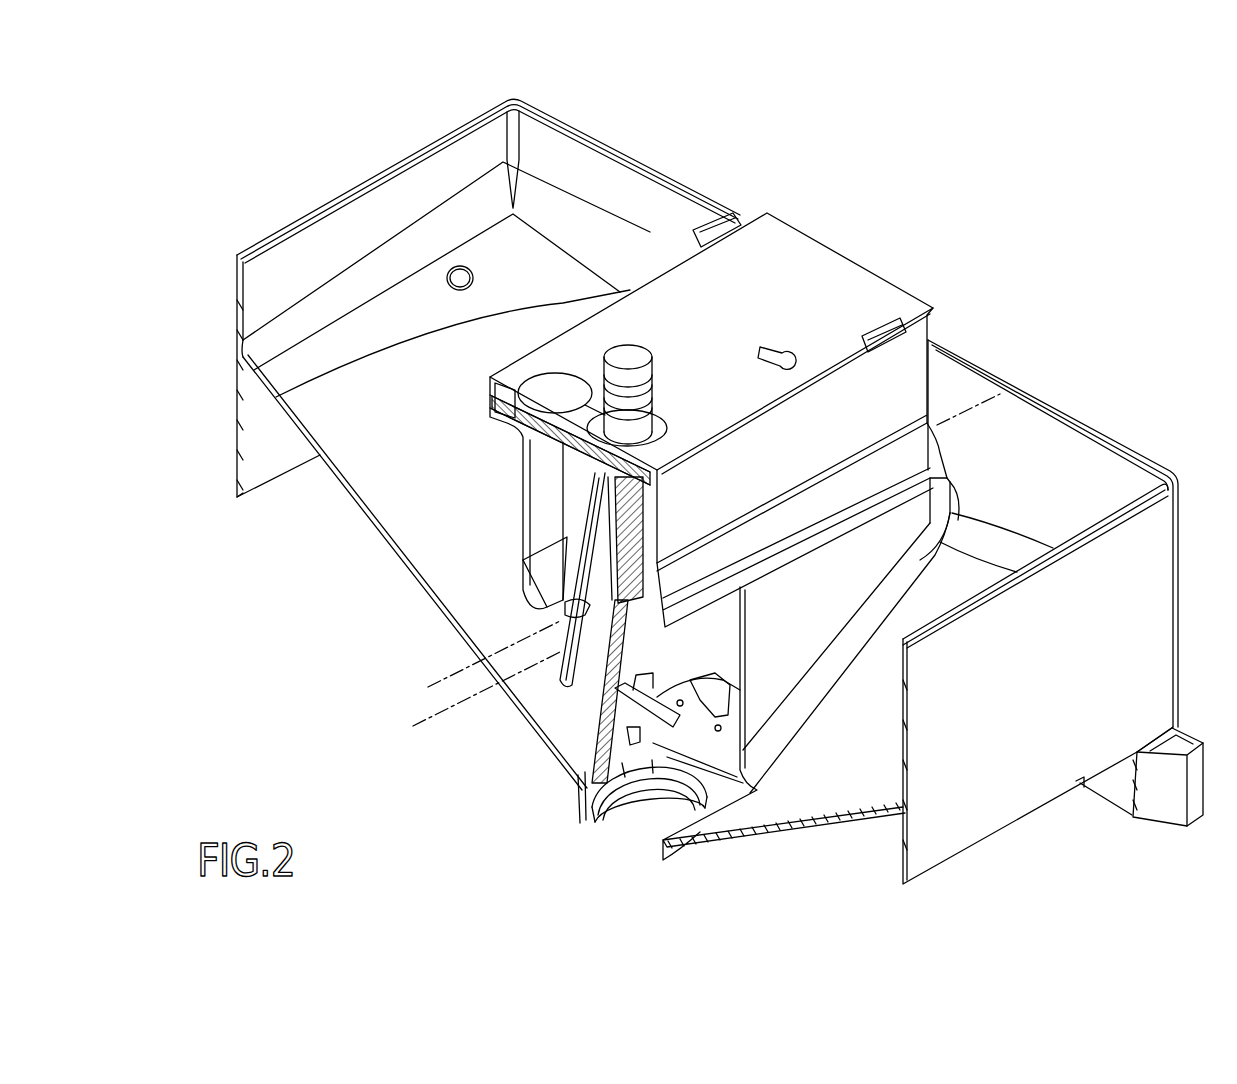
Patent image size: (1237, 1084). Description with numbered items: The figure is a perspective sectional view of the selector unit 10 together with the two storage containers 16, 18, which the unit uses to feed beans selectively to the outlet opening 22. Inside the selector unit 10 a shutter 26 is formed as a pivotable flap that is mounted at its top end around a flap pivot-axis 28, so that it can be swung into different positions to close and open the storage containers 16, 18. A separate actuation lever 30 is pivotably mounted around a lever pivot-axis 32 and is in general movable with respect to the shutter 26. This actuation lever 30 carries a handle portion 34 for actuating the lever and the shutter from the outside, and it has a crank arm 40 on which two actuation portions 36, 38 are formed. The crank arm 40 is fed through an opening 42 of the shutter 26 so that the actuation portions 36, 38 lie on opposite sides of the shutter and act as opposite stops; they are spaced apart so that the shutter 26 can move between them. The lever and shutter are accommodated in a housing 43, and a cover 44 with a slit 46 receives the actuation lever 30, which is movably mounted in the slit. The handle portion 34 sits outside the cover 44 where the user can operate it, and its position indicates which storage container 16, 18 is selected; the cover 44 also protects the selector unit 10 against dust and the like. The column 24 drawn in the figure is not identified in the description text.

The selector unit 10 is at (962, 197).
The storage container 16 is at (1030, 420).
The storage container 18 is at (625, 187).
The outlet opening 22 is at (634, 822).
The support column 24 is at (777, 670).
The shutter 26 is at (587, 767).
The flap pivot-axis 28 is at (438, 714).
The actuation lever 30 is at (600, 520).
The lever pivot-axis 32 is at (428, 687).
The handle portion 34 is at (640, 350).
The actuation portion 36 is at (618, 745).
The actuation portion 38 is at (585, 760).
The crank arm 40 is at (573, 705).
The opening 42 is at (727, 753).
The housing 43 is at (545, 462).
The cover 44 is at (845, 282).
The slit 46 is at (573, 417).